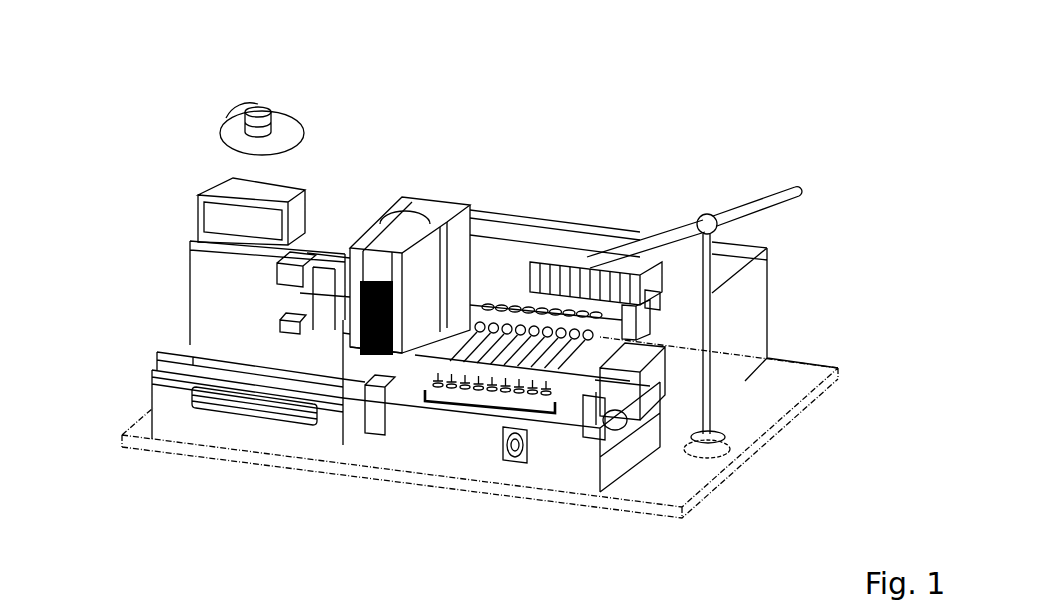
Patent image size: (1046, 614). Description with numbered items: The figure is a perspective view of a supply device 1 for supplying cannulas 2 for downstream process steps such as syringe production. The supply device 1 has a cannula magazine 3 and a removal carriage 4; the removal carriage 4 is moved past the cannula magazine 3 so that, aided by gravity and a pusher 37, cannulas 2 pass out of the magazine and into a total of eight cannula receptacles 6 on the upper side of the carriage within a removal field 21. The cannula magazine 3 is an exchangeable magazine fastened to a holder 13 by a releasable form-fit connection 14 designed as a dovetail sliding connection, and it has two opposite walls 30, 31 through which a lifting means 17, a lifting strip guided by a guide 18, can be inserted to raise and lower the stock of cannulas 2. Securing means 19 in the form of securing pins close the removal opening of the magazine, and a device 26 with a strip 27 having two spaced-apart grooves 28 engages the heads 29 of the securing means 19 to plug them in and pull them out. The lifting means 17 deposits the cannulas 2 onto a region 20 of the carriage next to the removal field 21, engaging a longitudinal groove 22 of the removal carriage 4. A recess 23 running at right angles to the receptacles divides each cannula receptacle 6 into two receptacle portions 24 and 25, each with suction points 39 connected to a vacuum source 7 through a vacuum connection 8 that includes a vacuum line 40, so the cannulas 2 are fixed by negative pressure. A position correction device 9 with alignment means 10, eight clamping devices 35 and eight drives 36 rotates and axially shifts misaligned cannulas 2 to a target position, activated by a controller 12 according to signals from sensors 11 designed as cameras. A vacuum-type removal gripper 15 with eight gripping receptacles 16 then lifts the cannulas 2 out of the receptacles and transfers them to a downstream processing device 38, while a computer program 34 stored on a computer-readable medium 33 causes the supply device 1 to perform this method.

The supply device 1 is at (333, 93).
The cannulas 2 is at (377, 196).
The cannula magazine 3 is at (433, 252).
The removal carriage 4 is at (540, 418).
The cannula receptacles 6 is at (541, 346).
The vacuum source 7 is at (518, 462).
The vacuum connection 8 is at (588, 395).
The position correction device 9 is at (612, 334).
The alignment means 10 is at (604, 297).
The sensors 11 is at (490, 410).
The controller 12 is at (212, 184).
The holder 13 is at (413, 235).
The releasable form-fit connection 14 is at (410, 255).
The removal gripper 15 is at (707, 222).
The gripping receptacles 16 is at (598, 332).
The lifting means 17 is at (297, 287).
The guide 18 is at (330, 292).
The securing means 19 is at (347, 332).
The region 20 is at (376, 385).
The removal field 21 is at (522, 336).
The longitudinal groove 22 is at (383, 366).
The recess 23 is at (605, 367).
The receptacle portion 24 is at (582, 372).
The receptacle portion 25 is at (626, 373).
The device for removing and attaching the securing means 26 is at (275, 312).
The strip 27 is at (297, 325).
The grooves 28 is at (288, 327).
The heads 29 is at (287, 327).
The wall 30 is at (364, 230).
The wall 31 is at (423, 250).
The computer-readable medium 33 is at (254, 122).
The computer program 34 is at (263, 112).
The clamping devices 35 is at (607, 355).
The drives 36 is at (625, 320).
The pusher 37 is at (393, 233).
The downstream processing device 38 is at (762, 262).
The suction points 39 is at (576, 287).
The vacuum line 40 is at (640, 378).